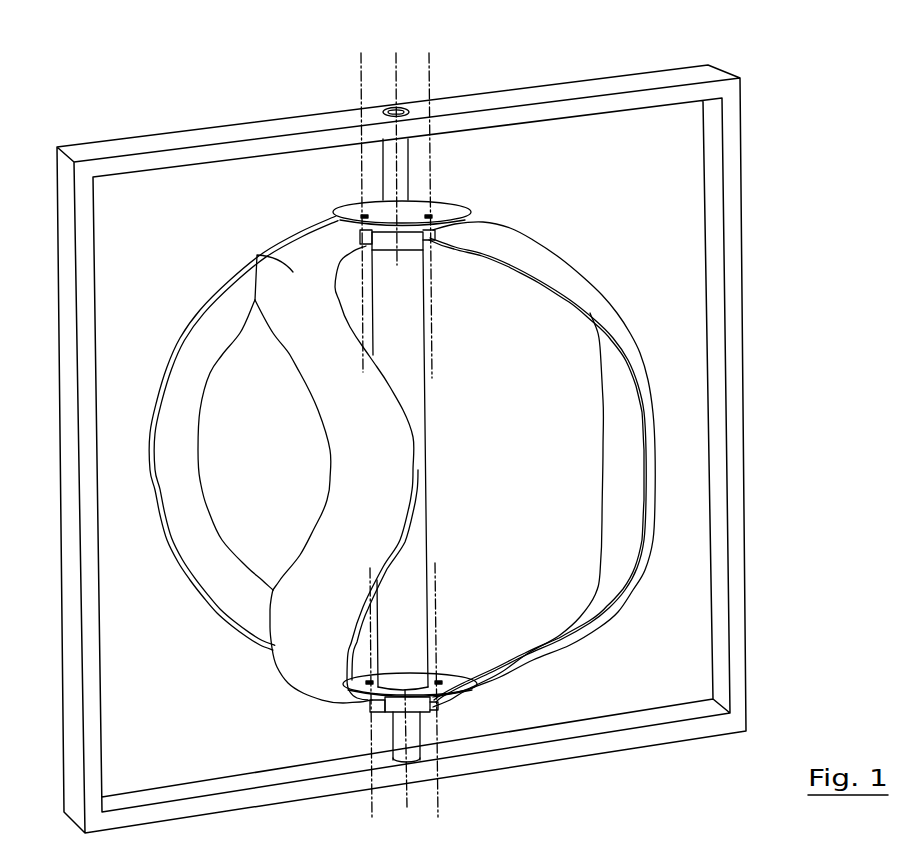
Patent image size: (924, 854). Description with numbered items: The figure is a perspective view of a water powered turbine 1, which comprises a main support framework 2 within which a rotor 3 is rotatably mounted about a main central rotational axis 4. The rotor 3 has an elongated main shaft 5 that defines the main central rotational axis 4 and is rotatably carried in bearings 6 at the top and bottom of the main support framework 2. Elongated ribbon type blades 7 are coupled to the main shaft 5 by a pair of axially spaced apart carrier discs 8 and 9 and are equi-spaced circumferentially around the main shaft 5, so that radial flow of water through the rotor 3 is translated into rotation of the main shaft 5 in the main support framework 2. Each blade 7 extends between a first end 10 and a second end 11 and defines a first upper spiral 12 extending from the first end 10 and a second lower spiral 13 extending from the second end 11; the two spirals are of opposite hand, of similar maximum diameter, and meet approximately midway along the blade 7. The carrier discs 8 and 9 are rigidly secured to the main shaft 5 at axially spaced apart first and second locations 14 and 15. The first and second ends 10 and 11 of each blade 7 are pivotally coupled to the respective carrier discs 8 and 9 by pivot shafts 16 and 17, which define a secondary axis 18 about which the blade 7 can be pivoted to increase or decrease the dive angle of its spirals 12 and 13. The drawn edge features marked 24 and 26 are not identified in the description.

The turbine 1 is at (838, 112).
The main support framework 2 is at (745, 487).
The rotor 3 is at (152, 264).
The main central rotational axis 4 is at (396, 80).
The main shaft 5 is at (413, 397).
The bearings 6 is at (403, 108).
The blade 7 is at (173, 427).
The carrier disc 8 is at (410, 242).
The carrier disc 9 is at (442, 705).
The first end 10 is at (334, 210).
The second end 11 is at (467, 680).
The first upper spiral 12 is at (267, 255).
The second lower spiral 13 is at (305, 663).
The first location 14 is at (365, 215).
The second location 15 is at (390, 697).
The pivot shaft 16 is at (362, 213).
The pivot shaft 17 is at (440, 683).
The secondary axis 18 is at (361, 76).
The blade rim 24 is at (592, 290).
The blade inner edge 26 is at (612, 433).